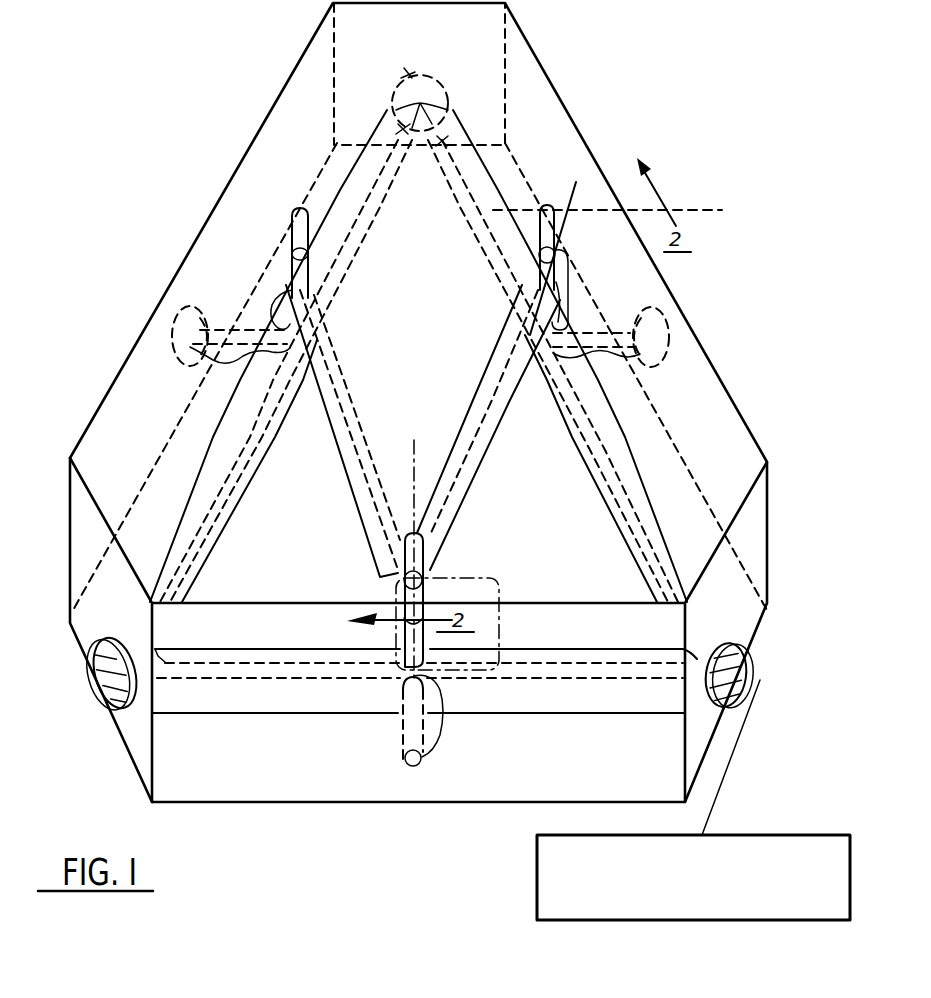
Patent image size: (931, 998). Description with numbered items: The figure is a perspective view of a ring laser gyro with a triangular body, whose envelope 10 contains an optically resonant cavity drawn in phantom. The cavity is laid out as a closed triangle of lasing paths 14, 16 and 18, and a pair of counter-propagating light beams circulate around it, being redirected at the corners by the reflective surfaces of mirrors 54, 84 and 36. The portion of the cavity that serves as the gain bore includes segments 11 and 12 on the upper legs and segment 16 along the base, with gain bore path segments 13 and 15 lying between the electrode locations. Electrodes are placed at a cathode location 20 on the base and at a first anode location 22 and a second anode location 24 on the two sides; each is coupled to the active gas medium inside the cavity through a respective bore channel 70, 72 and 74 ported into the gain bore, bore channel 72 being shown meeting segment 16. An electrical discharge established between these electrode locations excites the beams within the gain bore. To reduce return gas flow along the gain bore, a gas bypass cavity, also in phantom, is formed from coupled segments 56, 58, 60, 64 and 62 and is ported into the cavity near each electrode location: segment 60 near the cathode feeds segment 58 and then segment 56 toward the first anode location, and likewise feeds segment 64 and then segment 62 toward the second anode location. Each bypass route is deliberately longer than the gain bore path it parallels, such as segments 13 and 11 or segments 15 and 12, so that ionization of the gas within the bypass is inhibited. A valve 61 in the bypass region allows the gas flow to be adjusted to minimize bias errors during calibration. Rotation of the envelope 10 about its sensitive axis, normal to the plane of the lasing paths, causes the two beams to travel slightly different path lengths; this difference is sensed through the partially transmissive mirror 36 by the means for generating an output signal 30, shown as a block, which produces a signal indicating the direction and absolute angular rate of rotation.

The envelope 10 is at (566, 99).
The mirror 84 is at (412, 75).
The gain bore segment 11 is at (278, 442).
The gain bore segment 12 is at (583, 486).
The gas bypass cavity segment 58 is at (353, 498).
The gas bypass cavity segment 64 is at (487, 470).
The gas bypass cavity segment 56 is at (284, 313).
The gas bypass cavity segment 62 is at (568, 290).
The anode 1 location 22 is at (152, 322).
The anode 2 location 24 is at (680, 309).
The bore channel 70 is at (238, 362).
The bore channel 74 is at (598, 360).
The lasing path 14 is at (192, 460).
The lasing path 18 is at (635, 460).
The valve 61 is at (368, 605).
The gas bypass cavity segment 60 is at (499, 612).
The gain bore path segment 13 is at (268, 649).
The gain bore path segment 15 is at (606, 649).
The lasing path 16 is at (289, 713).
The bore channel 72 is at (441, 717).
The cathode location 20 is at (420, 764).
The mirror 54 is at (95, 690).
The partially transmissive mirror 36 is at (738, 667).
The means for generating an output signal 30 is at (545, 872).